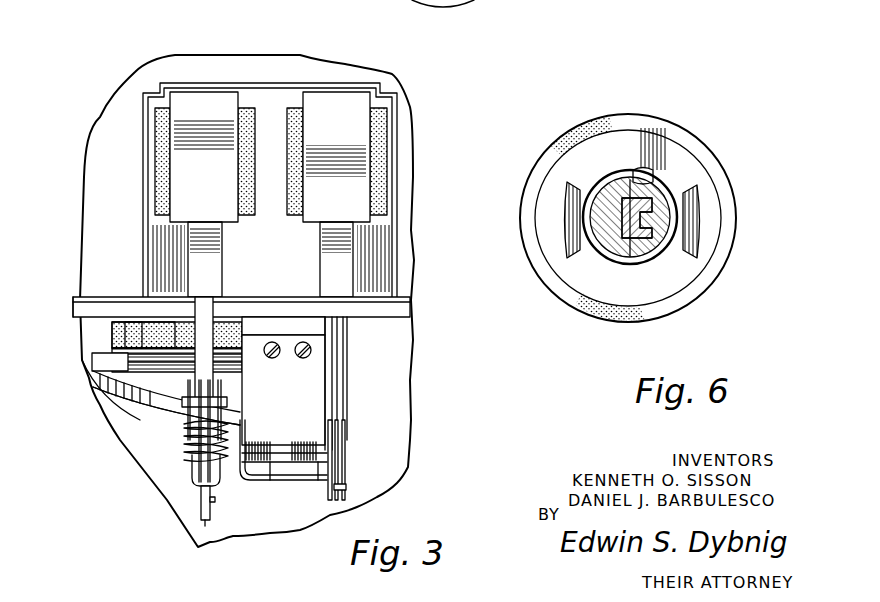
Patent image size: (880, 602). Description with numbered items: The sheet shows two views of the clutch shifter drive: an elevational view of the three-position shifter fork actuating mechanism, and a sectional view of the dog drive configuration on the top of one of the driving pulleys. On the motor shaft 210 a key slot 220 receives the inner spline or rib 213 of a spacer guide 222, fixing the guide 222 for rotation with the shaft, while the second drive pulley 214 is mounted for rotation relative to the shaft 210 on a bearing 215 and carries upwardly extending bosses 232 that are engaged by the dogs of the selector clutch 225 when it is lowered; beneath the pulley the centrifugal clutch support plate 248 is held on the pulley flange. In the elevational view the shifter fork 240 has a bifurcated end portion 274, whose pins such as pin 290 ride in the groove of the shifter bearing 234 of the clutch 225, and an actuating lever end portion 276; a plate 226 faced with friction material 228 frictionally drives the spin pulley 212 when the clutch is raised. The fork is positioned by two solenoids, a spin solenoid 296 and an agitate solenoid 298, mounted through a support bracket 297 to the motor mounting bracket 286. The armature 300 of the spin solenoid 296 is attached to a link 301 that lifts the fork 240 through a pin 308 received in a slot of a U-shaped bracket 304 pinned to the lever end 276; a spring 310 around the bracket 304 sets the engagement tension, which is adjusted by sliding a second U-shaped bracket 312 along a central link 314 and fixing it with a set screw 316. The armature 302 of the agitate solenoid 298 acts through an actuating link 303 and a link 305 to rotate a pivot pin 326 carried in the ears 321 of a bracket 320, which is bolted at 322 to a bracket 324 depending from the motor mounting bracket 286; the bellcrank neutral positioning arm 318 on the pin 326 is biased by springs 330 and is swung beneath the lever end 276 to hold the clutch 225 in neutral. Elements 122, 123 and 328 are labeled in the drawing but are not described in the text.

In FIG. 3, the spin solenoid 296 is at (198, 106).
In FIG. 3, the agitate solenoid 298 is at (328, 112).
In FIG. 3, the support bracket 297 is at (405, 117).
In FIG. 3, the armature 300 is at (207, 243).
In FIG. 3, the armature 302 is at (338, 270).
In FIG. 3, the link 301 is at (210, 317).
In FIG. 3, the bracket 324 is at (280, 315).
In FIG. 3, the motor mounting bracket 286 is at (398, 308).
In FIG. 3, the pin 290 is at (78, 300).
In FIG. 3, the drive pulley 212 is at (112, 327).
In FIG. 3, the conductor layer 122 is at (112, 338).
In FIG. 3, the friction material 228 is at (152, 345).
In FIG. 3, the plate 226 is at (130, 320).
In FIG. 3, the bifurcated end portion 274 is at (93, 360).
In FIG. 3, the shifter bearing 234 is at (93, 385).
In FIG. 3, the selector clutch 225 is at (122, 402).
In FIG. 3, the shifter fork 240 is at (127, 410).
In FIG. 3, the pin 308 is at (180, 403).
In FIG. 3, the actuating lever end portion 276 is at (180, 437).
In FIG. 3, the spring 310 is at (188, 455).
In FIG. 3, the U-shaped bracket 304 is at (192, 488).
In FIG. 3, the set screw 316 is at (216, 500).
In FIG. 3, the U-shaped bracket 312 is at (208, 522).
In FIG. 3, the central link 314 is at (224, 483).
In FIG. 3, the springs 330 is at (262, 440).
In FIG. 3, the neutral positioning arm 318 is at (236, 418).
In FIG. 3, the bolt 322 is at (312, 355).
In FIG. 3, the bracket 320 is at (312, 365).
In FIG. 3, the ears 321 is at (320, 440).
In FIG. 3, the actuating link 303 is at (345, 377).
In FIG. 3, the neutral arm pivot pin 326 is at (328, 433).
In FIG. 3, the link 305 is at (337, 460).
In FIG. 3, the rivet 328 is at (348, 486).
In FIG. 6, the drive pulley 214 is at (683, 155).
In FIG. 6, the support plate 248 is at (570, 135).
In FIG. 6, the insulating segment 123 is at (578, 313).
In FIG. 6, the spacer guide 222 is at (604, 242).
In FIG. 6, the motor shaft 210 is at (618, 200).
In FIG. 6, the inner spline or rib 213 is at (648, 242).
In FIG. 6, the key slot 220 is at (640, 255).
In FIG. 6, the bearing 215 is at (650, 176).
In FIG. 6, the bosses 232 is at (567, 212).